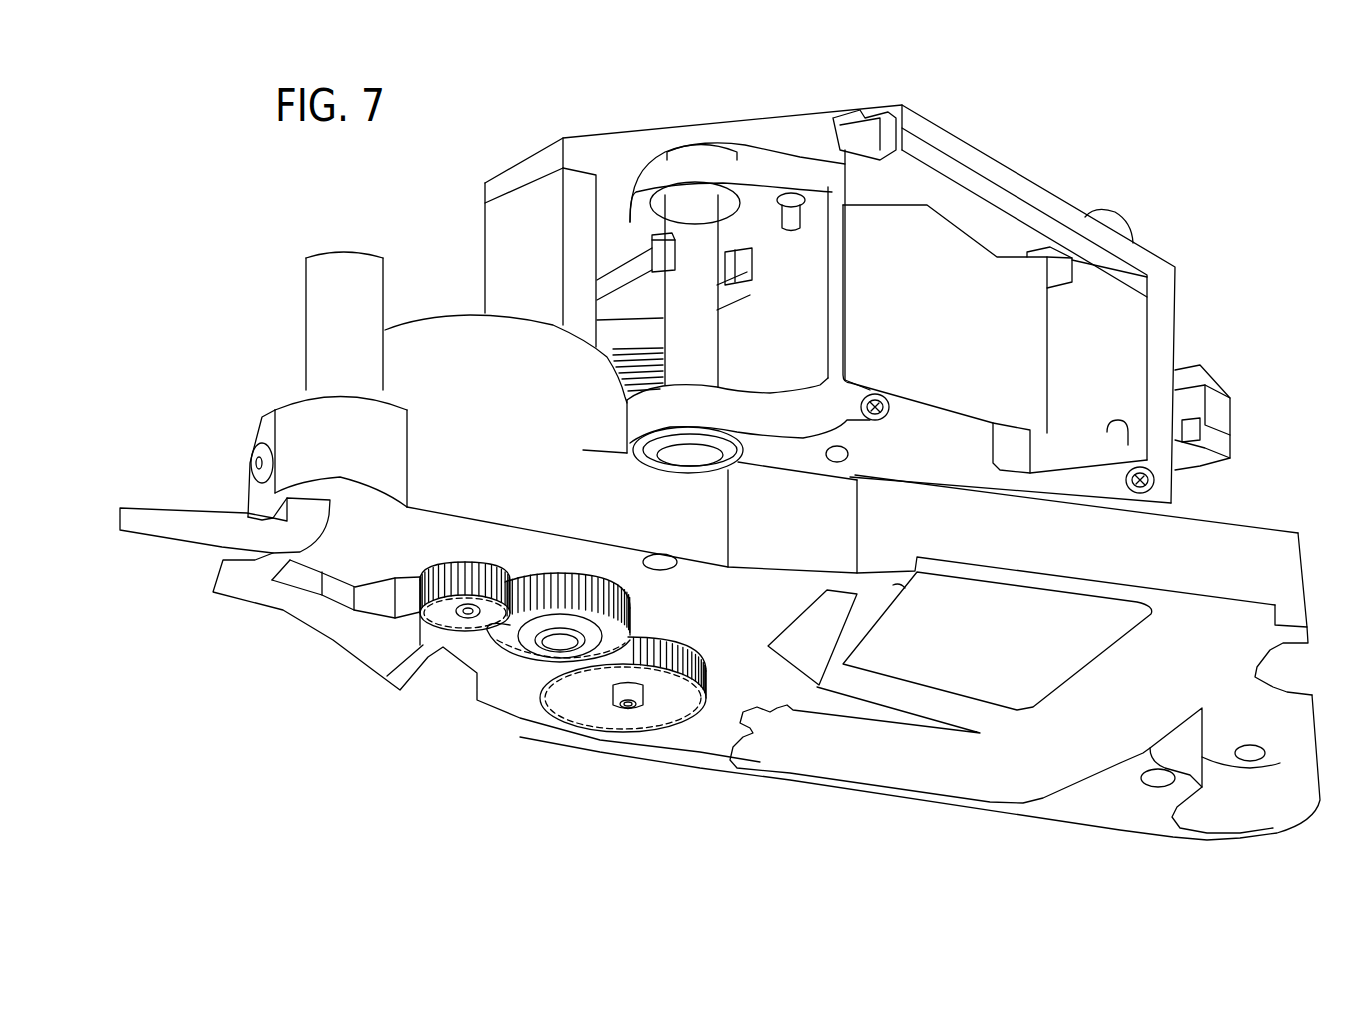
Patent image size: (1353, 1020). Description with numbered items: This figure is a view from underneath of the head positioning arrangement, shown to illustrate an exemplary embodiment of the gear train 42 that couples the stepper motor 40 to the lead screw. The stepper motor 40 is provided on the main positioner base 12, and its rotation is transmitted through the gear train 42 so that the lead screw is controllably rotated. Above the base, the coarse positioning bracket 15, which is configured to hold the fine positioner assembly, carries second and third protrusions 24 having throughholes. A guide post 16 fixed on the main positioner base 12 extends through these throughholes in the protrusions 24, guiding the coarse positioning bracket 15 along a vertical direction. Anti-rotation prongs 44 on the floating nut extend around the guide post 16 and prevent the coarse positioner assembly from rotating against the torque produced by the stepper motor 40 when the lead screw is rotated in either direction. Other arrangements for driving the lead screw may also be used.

The main positioner base 12 is at (1233, 540).
The coarse positioning bracket 15 is at (1158, 308).
The guide post 16 is at (703, 230).
The second and third protrusions 24 is at (695, 170).
The stepper motor 40 is at (450, 340).
The gear train 42 is at (452, 623).
The anti-rotation prongs 44 is at (653, 238).